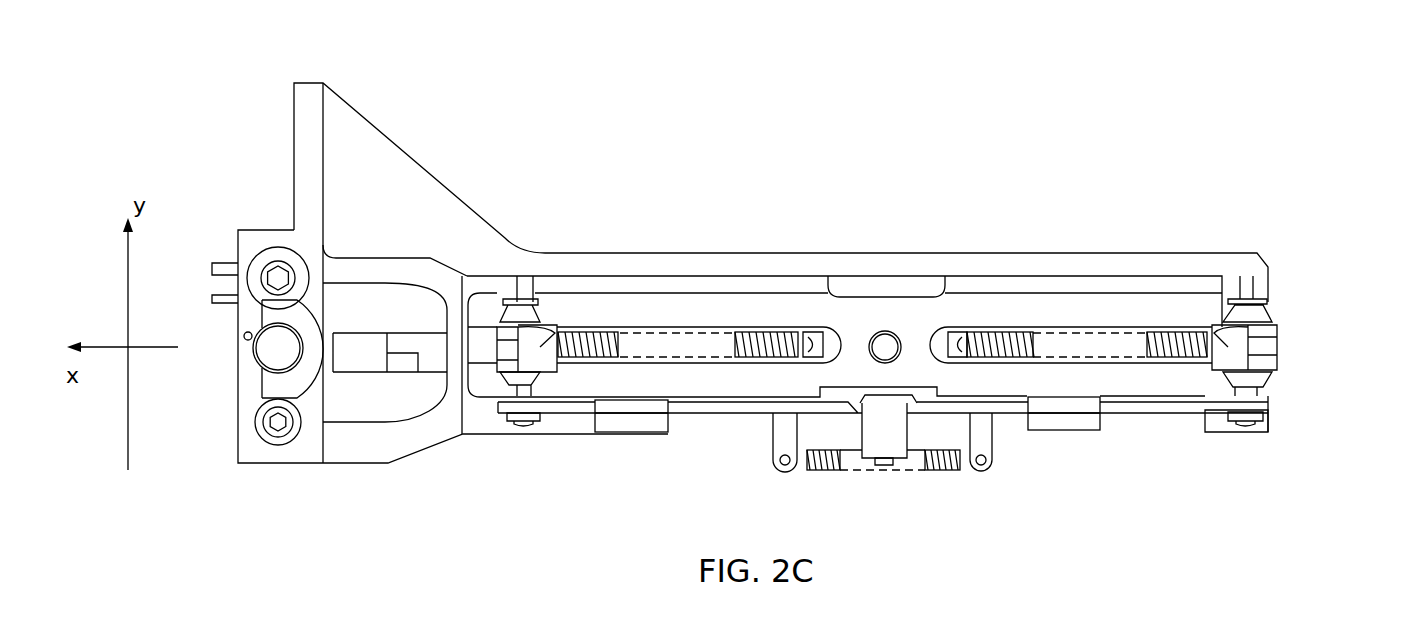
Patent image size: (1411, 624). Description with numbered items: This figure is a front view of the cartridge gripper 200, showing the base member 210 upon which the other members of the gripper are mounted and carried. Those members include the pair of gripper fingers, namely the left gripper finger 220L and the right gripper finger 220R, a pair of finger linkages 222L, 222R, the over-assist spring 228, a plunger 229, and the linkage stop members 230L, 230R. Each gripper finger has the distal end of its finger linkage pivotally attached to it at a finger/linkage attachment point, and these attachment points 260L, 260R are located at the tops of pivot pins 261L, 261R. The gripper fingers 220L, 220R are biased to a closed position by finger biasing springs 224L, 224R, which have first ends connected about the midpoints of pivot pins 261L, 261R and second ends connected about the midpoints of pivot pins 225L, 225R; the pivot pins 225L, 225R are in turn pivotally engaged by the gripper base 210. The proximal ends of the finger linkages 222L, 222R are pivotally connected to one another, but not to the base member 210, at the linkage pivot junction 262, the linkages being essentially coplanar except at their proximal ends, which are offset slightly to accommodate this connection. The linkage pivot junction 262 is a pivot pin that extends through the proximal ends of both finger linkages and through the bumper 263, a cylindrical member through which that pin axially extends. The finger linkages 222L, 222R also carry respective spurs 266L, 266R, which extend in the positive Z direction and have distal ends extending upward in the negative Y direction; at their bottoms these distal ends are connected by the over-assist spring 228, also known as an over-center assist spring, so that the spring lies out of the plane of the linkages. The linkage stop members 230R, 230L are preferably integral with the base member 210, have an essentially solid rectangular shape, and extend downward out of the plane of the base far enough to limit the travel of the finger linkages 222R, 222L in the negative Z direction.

The cartridge gripper 200 is at (1100, 102).
The base member 210 is at (362, 463).
The right gripper finger 220R is at (553, 323).
The left gripper finger 220L is at (1207, 327).
The right finger biasing spring 224R is at (620, 337).
The left finger biasing spring 224L is at (1033, 337).
The right pivot pin 225R is at (829, 330).
The left pivot pin 225L is at (944, 330).
The plunger 229 is at (901, 338).
The over-assist spring 228 is at (925, 470).
The right linkage stop member 230R is at (615, 432).
The left linkage stop member 230L is at (1068, 432).
The right finger linkage 222R is at (718, 413).
The left finger linkage 222L is at (1152, 412).
The right finger/linkage attachment point 260R is at (513, 285).
The left finger/linkage attachment point 260L is at (1245, 288).
The right pivot pin 261R is at (507, 413).
The left pivot pin 261L is at (1263, 391).
The linkage pivot junction 262 is at (883, 480).
The bumper 263 is at (868, 439).
The right spur 266R is at (773, 449).
The left spur 266L is at (993, 445).